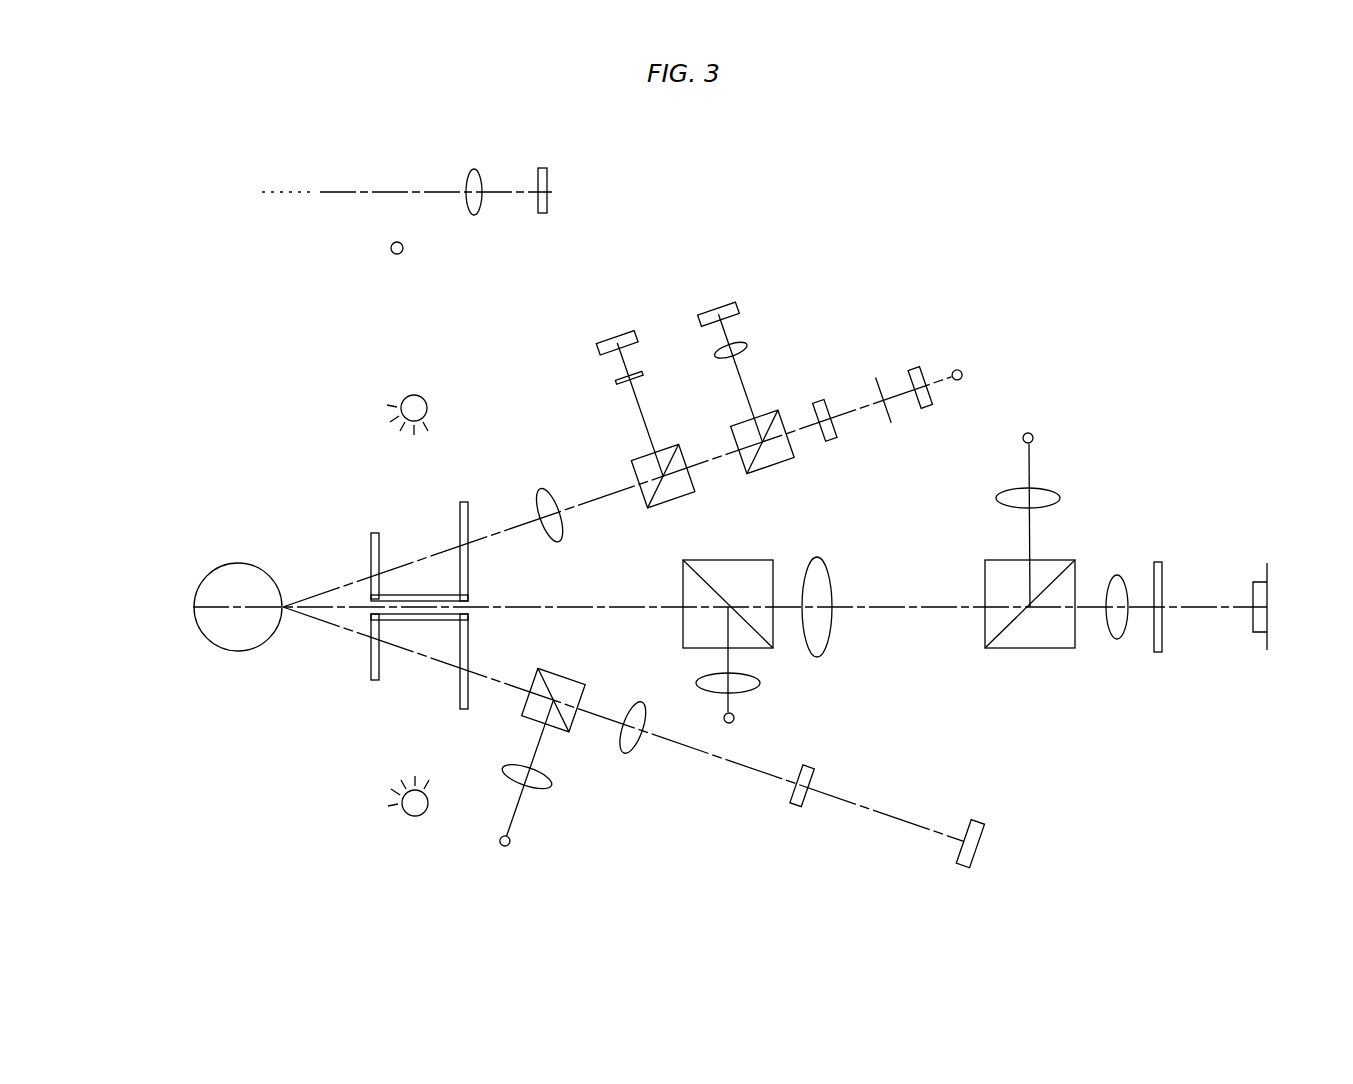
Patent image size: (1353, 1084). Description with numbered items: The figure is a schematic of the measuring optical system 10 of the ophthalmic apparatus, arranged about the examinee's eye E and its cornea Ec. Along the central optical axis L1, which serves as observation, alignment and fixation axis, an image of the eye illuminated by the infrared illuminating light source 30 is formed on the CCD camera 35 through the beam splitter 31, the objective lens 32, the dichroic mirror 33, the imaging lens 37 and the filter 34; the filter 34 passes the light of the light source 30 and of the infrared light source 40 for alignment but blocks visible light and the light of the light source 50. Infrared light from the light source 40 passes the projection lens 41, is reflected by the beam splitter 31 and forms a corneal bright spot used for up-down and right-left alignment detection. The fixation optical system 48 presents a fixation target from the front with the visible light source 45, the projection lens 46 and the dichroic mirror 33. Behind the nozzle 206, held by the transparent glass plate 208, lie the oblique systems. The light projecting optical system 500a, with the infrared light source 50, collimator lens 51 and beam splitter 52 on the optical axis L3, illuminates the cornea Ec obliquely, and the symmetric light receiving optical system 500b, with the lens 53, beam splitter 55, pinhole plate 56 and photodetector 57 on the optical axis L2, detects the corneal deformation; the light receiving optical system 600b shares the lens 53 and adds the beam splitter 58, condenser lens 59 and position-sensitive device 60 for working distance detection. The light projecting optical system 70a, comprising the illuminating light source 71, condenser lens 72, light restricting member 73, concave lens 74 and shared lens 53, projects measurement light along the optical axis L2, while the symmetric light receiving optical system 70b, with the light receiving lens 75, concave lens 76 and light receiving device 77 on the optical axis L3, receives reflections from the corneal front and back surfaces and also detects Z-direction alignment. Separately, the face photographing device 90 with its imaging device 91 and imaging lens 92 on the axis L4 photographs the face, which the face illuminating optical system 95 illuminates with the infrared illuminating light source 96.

The measuring optical system 10 is at (337, 480).
The infrared illuminating light source 30 is at (414, 396).
The beam splitter 31 is at (700, 575).
The objective lens 32 is at (818, 560).
The dichroic mirror 33 is at (995, 640).
The filter 34 is at (1160, 585).
The CCD camera 35 is at (1258, 628).
The imaging lens 37 is at (1115, 625).
The infrared light source for alignment 40 is at (735, 718).
The projection lens 41 is at (760, 683).
The visible light source (fixation lamp) 45 is at (1035, 437).
The projection lens 46 is at (1060, 498).
The fixation optical system 48 is at (1147, 437).
The infrared light source 50 is at (505, 850).
The collimator lens 51 is at (545, 793).
The beam splitter 52 is at (568, 680).
The lens 53 is at (545, 490).
The beam splitter 55 is at (672, 460).
The pinhole plate 56 is at (612, 383).
The photodetector 57 is at (625, 332).
The beam splitter 58 is at (765, 420).
The condenser lens 59 is at (750, 345).
The position-sensitive device 60 is at (725, 305).
The light projecting optical system 70a is at (972, 302).
The light receiving optical system 70b is at (910, 857).
The illuminating light source 71 is at (962, 373).
The condenser lens 72 is at (917, 365).
The light restricting member 73 is at (882, 378).
The concave lens 74 is at (822, 400).
The light receiving lens 75 is at (628, 750).
The concave lens 76 is at (797, 803).
The light receiving device 77 is at (975, 820).
The face photographing device 90 is at (582, 190).
The imaging device 91 is at (548, 172).
The imaging lens 92 is at (478, 170).
The face illuminating optical system 95 is at (376, 258).
The illuminating light source 96 is at (397, 256).
The nozzle 206 is at (403, 597).
The glass plate 208 is at (375, 680).
The light projecting optical system 500a is at (537, 857).
The light receiving optical system 500b is at (558, 325).
The light receiving optical system 600b is at (770, 295).
The eye E is at (207, 620).
The cornea Ec is at (283, 618).
The optical axis L1 is at (562, 606).
The optical axis L2 is at (498, 530).
The optical axis L3 is at (705, 755).
The fourth optical axis L4 is at (370, 192).